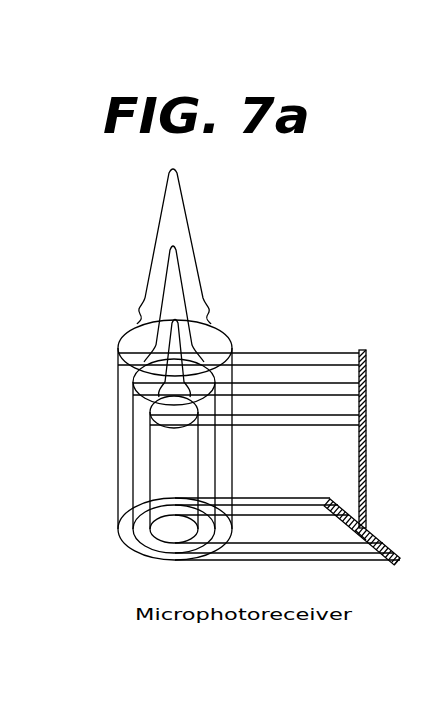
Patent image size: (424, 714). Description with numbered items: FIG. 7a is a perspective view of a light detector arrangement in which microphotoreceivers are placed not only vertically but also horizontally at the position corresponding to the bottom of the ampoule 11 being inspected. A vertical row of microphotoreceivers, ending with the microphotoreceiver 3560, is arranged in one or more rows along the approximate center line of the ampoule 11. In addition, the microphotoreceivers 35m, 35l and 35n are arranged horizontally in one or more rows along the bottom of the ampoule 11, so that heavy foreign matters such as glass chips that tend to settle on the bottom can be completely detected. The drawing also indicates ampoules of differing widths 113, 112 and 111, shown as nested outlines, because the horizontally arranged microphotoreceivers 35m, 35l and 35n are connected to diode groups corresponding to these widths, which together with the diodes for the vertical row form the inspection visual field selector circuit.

The ampoule 11 is at (143, 233).
The ampoule of first width 111 is at (150, 487).
The ampoule of second width 112 is at (133, 442).
The ampoule of third width 113 is at (118, 394).
The microphotoreceiver 3560 is at (365, 352).
The microphotoreceiver 35m is at (333, 502).
The microphotoreceiver 35l is at (357, 535).
The microphotoreceiver 35n is at (394, 567).